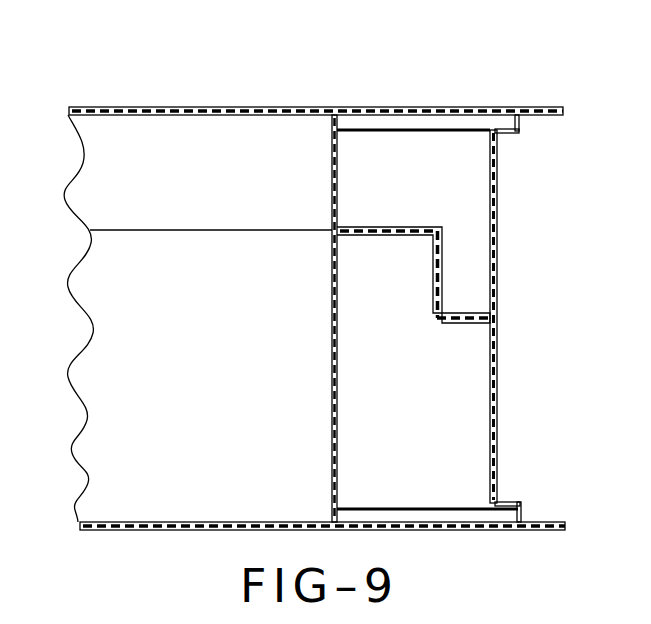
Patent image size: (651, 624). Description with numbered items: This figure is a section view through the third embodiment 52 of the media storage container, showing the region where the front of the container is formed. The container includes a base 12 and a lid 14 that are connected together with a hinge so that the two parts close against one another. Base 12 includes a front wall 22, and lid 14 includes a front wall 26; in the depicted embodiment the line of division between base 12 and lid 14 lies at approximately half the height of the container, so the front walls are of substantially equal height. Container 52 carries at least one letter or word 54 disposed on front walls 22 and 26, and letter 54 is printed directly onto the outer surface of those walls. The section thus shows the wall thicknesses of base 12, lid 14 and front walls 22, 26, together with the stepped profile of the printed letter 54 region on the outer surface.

The lid 14 is at (136, 100).
The base 12 is at (142, 539).
The third embodiment 52 is at (476, 72).
The front wall 26 is at (493, 159).
The letter 54 is at (512, 283).
The front wall 22 is at (496, 490).